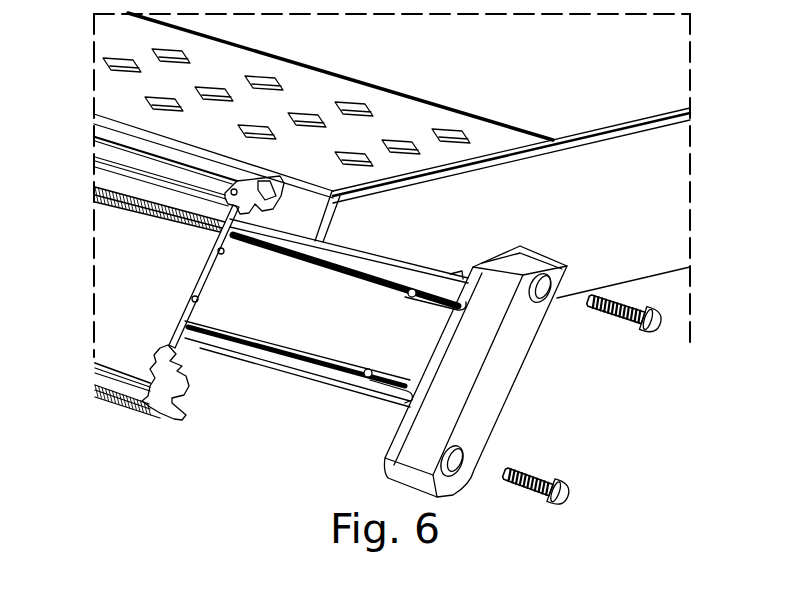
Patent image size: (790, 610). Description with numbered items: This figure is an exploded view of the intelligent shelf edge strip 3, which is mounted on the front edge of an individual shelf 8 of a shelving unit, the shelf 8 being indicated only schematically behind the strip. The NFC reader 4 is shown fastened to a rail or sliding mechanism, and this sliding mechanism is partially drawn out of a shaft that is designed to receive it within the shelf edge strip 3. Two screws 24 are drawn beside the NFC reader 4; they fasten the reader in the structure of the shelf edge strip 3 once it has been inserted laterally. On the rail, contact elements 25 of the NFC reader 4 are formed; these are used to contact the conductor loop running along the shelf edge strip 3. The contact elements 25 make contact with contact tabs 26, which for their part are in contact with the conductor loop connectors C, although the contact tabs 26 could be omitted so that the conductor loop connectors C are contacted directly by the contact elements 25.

The shelf edge strip 3 is at (107, 251).
The shelf 8 is at (675, 203).
The NFC reader 4 is at (503, 363).
The screws 24 is at (664, 322).
The contact elements 25 is at (411, 290).
The contact tabs 26 is at (226, 221).
The conductor loop connectors C is at (206, 247).